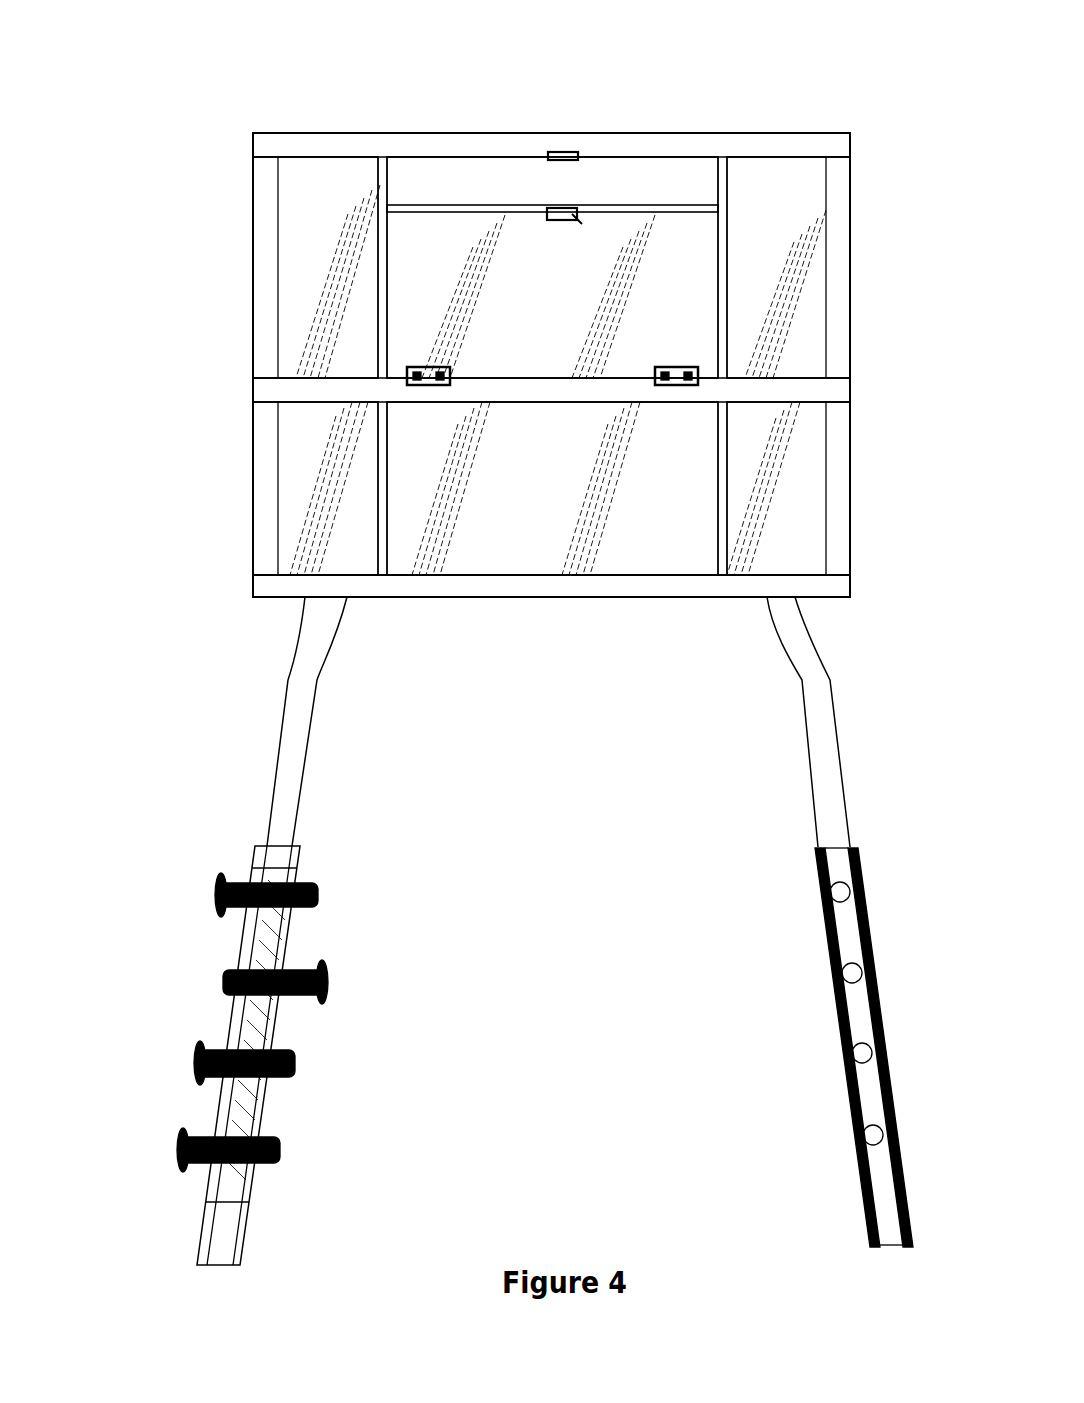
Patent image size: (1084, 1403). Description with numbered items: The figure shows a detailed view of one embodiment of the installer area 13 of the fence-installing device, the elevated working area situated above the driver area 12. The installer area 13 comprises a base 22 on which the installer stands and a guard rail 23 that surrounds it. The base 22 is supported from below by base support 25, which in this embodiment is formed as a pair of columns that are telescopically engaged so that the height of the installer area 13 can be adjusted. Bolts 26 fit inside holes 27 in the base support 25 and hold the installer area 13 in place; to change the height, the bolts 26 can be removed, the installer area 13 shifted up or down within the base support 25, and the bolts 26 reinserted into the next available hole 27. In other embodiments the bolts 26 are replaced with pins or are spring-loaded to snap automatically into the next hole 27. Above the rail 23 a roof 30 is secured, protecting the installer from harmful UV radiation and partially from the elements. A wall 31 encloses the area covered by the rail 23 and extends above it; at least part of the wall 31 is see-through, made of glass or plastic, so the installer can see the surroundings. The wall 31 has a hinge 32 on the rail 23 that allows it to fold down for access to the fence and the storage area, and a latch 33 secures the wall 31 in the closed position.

The driver area 12 is at (334, 913).
The installer area 13 is at (176, 358).
The base 22 is at (250, 587).
The guard rail 23 is at (268, 188).
The base support 25 is at (283, 681).
The bolt 26 is at (209, 888).
The hole 27 is at (839, 873).
The roof 30 is at (472, 128).
The wall 31 is at (808, 251).
The hinge 32 is at (706, 383).
The latch 33 is at (562, 146).